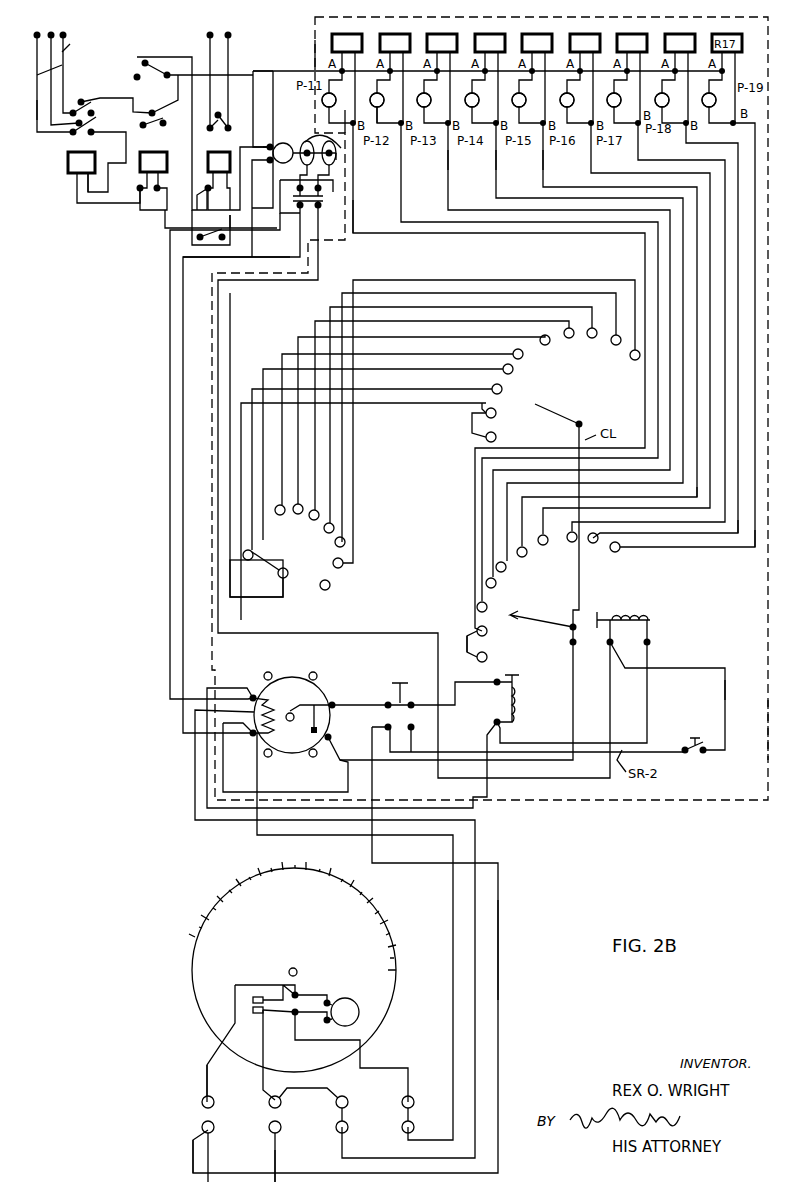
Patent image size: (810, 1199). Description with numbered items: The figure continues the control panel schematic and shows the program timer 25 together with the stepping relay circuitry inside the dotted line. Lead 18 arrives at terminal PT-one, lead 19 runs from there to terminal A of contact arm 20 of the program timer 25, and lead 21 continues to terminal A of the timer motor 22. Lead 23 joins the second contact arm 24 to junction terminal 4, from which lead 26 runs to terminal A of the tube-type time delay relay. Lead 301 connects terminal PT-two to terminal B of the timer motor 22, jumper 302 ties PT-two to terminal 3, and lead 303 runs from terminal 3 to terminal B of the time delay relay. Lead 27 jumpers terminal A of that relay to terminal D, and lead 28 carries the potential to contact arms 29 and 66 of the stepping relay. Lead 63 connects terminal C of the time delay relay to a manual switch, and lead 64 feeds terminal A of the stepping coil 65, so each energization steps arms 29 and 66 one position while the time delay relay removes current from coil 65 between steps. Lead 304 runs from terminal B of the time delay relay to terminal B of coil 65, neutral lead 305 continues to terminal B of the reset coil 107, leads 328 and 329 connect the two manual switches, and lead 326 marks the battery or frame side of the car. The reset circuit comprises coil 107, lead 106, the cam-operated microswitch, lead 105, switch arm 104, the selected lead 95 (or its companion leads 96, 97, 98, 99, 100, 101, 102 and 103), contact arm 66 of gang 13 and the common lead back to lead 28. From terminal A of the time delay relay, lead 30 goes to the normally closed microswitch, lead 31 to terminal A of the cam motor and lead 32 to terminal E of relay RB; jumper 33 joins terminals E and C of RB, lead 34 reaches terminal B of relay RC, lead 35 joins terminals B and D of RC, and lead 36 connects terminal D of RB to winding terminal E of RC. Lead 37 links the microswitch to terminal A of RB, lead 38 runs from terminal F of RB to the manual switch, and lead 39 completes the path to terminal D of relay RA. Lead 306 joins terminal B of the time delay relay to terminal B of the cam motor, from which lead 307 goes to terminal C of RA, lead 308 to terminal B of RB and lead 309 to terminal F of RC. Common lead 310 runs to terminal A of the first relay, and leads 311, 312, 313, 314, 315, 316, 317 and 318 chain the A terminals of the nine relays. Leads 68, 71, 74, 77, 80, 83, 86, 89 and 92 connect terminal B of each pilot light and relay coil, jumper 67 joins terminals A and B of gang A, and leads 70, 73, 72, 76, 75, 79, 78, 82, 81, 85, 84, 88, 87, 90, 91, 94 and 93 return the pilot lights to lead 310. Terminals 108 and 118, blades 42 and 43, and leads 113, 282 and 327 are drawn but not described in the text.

The relay R9 311 is at (363, 42).
The relay R10 312 is at (413, 42).
The relay R11 313 is at (460, 42).
The relay R12 314 is at (507, 42).
The relay R13 315 is at (556, 42).
The relay R14 316 is at (603, 42).
The relay R15 317 is at (650, 42).
The relay R16 318 is at (698, 42).
The indicator lamp 70 is at (336, 94).
The lead 67 is at (342, 118).
The indicator lamp 73 is at (374, 94).
The lead 72 is at (387, 114).
The indicator lamp 76 is at (420, 94).
The indicator lamp 79 is at (468, 94).
The indicator lamp 82 is at (515, 94).
The indicator lamp 85 is at (563, 94).
The indicator lamp 88 is at (610, 94).
The indicator lamp 90 is at (658, 94).
The indicator lamp 94 is at (705, 94).
The conductor 71 is at (443, 232).
The conductor 74 is at (493, 222).
The conductor 77 is at (540, 210).
The conductor 80 is at (598, 198).
The conductor 83 is at (660, 190).
The conductor 84 is at (584, 140).
The conductor 87 is at (632, 138).
The conductor 91 is at (680, 130).
The conductor 93 is at (730, 125).
The conductor 75 is at (444, 140).
The conductor 78 is at (491, 140).
The conductor 81 is at (538, 140).
The conductor 86 is at (680, 522).
The conductor 89 is at (700, 535).
The conductor 92 is at (724, 547).
The gang 13 of stepping switch 13 is at (556, 387).
The conductor 103 is at (615, 280).
The conductor 102 is at (575, 293).
The conductor 101 is at (540, 307).
The conductor 100 is at (500, 321).
The conductor 99 is at (440, 337).
The conductor 98 is at (284, 350).
The conductor 97 is at (263, 366).
The conductor 96 is at (252, 386).
The conductor 95 is at (241, 460).
The conductor 105 is at (230, 495).
The conductor 104 is at (256, 578).
The conductor 106 is at (322, 633).
The conductor 306 is at (170, 380).
The conductor 30 is at (183, 568).
The wiper of gang 13 66 is at (553, 406).
The wiper of gang A 29 is at (536, 618).
The stepping coil 65 is at (522, 712).
The conductor 64 is at (452, 712).
The conductor 304 is at (480, 803).
The reset coil 107 is at (640, 618).
The conductor 305 is at (648, 705).
The conductor 329 is at (728, 692).
The conductor 328 is at (614, 770).
The conductor 326 is at (433, 730).
The time delay relay TDR-3 27 is at (286, 796).
The conductor 63 is at (354, 700).
The conductor 28 is at (418, 760).
The terminal 118 is at (40, 50).
The terminal 108 is at (68, 40).
The conductor 113 is at (30, 112).
The switch contacts 34 is at (115, 96).
The switch blade 35 is at (96, 118).
The conductor 36 is at (126, 160).
The switch 38 is at (150, 56).
The switch contacts 33 is at (170, 100).
The switch blade 43 is at (224, 106).
The switch blade 42 is at (231, 112).
The conductor 32 is at (258, 72).
The conductor 310 is at (296, 58).
The relay RC 309 is at (80, 212).
The relay RB 308 is at (148, 218).
The conductor 39 is at (238, 220).
The conductor 37 is at (262, 232).
The conductor 307 is at (262, 140).
The capacitor 31 is at (276, 203).
The conductor 68 is at (348, 222).
The conductor 26 is at (448, 902).
The conductor 327 is at (490, 918).
The conductor 303 is at (498, 975).
The program timer 25 is at (299, 958).
The timer motor 22 is at (352, 995).
The timer contact 21 is at (305, 992).
The timer contacts 20 is at (240, 1000).
The conductor 24 is at (253, 1015).
The conductor 19 is at (210, 1085).
The conductor 301 is at (265, 1045).
The conductor 23 is at (370, 1062).
The conductor 18 is at (205, 1168).
The conductor 282 is at (278, 1160).
The conductor 302 is at (312, 1095).
The terminal 3 is at (348, 1127).
The terminal 4 is at (414, 1127).